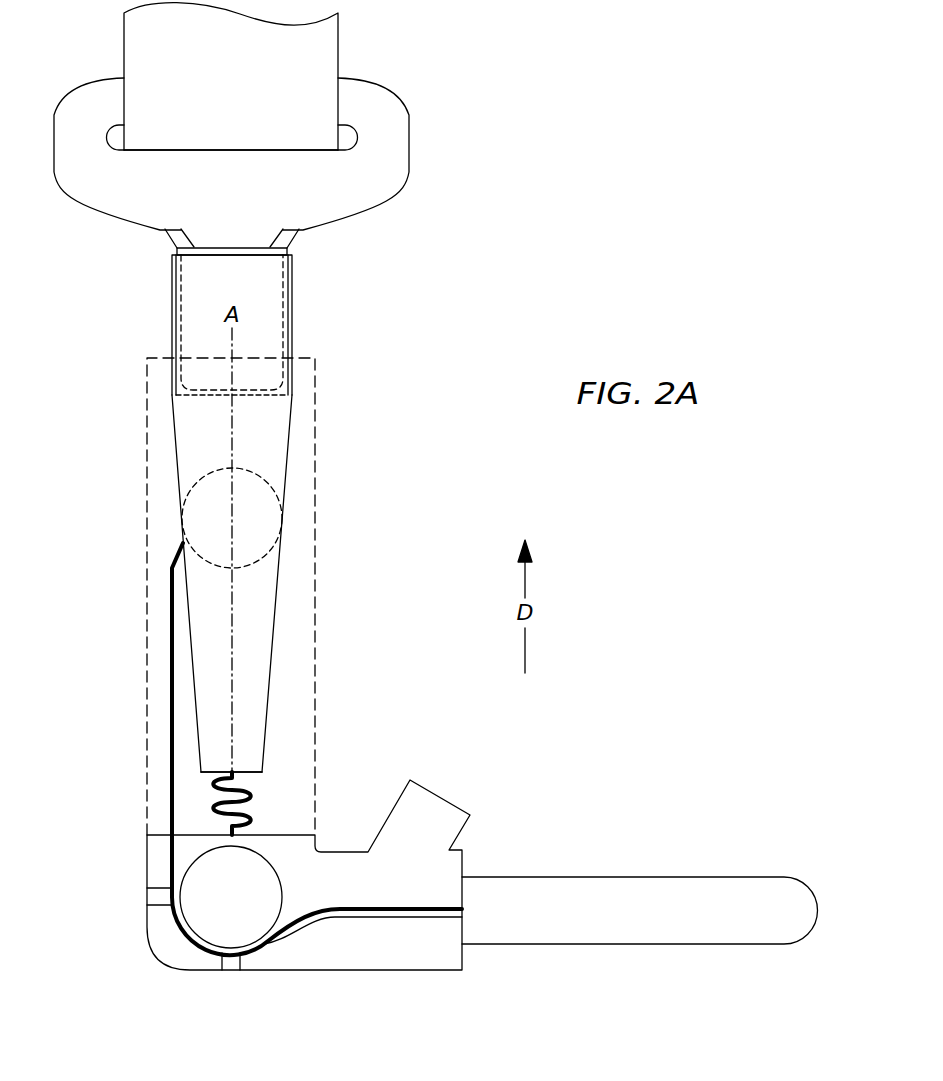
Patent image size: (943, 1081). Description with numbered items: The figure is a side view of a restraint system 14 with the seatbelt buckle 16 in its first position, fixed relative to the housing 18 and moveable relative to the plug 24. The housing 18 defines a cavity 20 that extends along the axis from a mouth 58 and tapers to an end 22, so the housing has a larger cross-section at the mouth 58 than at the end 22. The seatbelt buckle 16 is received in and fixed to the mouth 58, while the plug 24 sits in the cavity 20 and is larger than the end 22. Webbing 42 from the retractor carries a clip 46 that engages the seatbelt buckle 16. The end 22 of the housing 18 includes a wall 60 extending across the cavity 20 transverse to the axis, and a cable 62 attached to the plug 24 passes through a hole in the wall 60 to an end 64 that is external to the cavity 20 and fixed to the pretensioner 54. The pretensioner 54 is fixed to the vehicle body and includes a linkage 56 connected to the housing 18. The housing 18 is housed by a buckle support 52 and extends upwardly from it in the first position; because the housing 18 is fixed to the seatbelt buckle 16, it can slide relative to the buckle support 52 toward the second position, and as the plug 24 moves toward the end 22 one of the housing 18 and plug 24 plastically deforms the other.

The restraint system 14 is at (588, 157).
The seatbelt buckle 16 is at (272, 398).
The housing 18 is at (280, 587).
The cavity 20 is at (261, 444).
The end 22 is at (200, 761).
The plug 24 is at (230, 468).
The webbing 42 is at (340, 47).
The clip 46 is at (410, 163).
The buckle support 52 is at (315, 817).
The pretensioner 54 is at (620, 877).
The linkage 56 is at (172, 803).
The mouth 58 is at (263, 258).
The wall 60 is at (252, 782).
The cable 62 is at (250, 798).
The end 64 is at (239, 847).